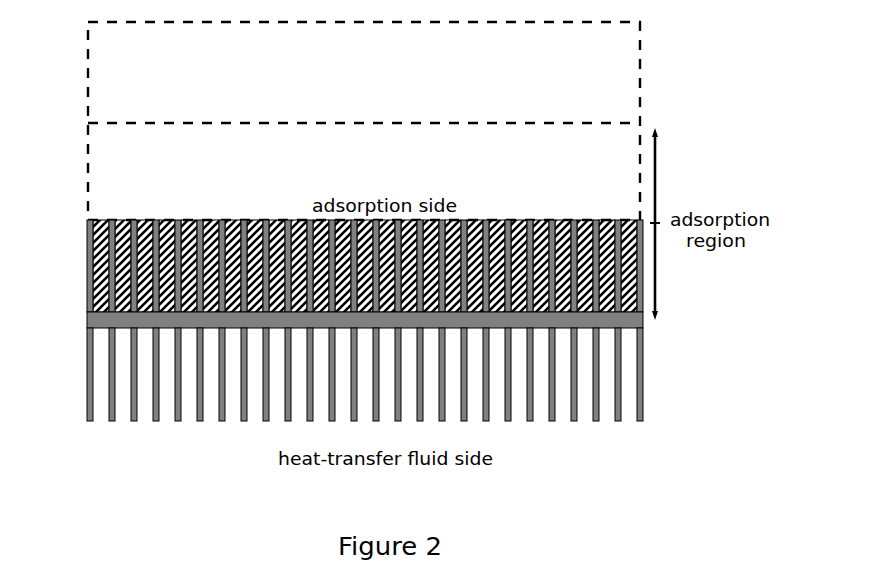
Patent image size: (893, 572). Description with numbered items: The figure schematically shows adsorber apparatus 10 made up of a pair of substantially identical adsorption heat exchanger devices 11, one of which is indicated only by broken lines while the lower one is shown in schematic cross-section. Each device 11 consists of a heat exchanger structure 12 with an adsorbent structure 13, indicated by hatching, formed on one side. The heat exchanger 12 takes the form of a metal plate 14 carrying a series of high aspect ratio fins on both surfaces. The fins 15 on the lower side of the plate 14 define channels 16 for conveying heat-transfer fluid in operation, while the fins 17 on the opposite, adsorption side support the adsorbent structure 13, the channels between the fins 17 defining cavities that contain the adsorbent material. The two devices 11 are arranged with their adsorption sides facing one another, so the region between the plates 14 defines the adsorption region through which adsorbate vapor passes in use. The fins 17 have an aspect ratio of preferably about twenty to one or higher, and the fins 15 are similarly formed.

The adsorber apparatus 10 is at (703, 38).
The adsorption heat exchanger device 11 is at (335, 247).
The heat exchanger structure 12 is at (365, 404).
The adsorbent structure 13 is at (233, 288).
The metal plate 14 is at (94, 325).
The fins on the HTF side 15 is at (87, 421).
The channels 16 is at (527, 421).
The fins on the adsorption side 17 is at (85, 220).